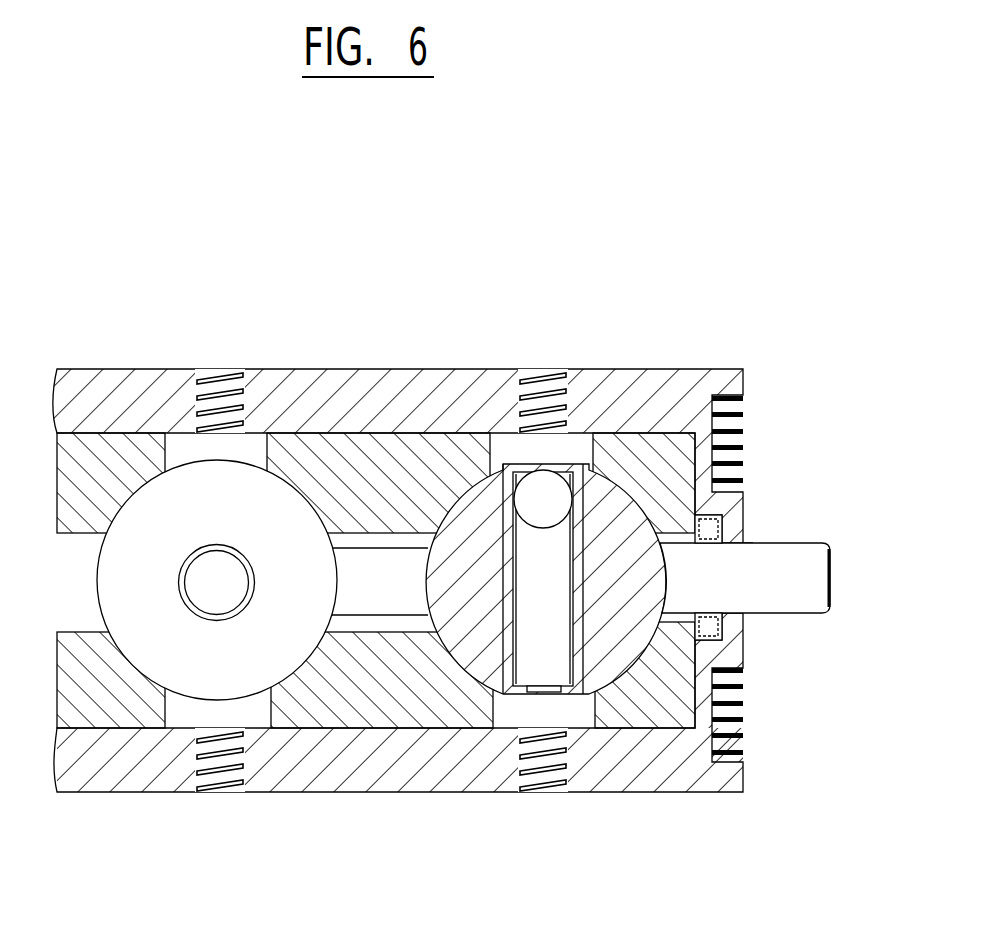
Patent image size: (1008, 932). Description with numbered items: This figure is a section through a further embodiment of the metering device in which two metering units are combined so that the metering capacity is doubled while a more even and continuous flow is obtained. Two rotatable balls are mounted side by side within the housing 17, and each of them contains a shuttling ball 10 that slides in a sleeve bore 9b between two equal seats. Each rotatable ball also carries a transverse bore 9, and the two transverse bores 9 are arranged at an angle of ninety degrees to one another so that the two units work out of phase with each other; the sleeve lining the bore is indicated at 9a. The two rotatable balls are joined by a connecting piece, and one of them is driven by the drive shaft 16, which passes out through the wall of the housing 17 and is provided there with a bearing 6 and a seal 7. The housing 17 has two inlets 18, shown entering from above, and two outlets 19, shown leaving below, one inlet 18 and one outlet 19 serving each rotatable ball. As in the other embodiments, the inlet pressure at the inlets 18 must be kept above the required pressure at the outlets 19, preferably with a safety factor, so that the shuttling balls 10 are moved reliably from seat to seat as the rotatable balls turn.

The bearing 6 is at (752, 542).
The seal 7 is at (723, 623).
The transverse bore 9 is at (505, 612).
The sleeve 9a is at (580, 643).
The sleeve bore 9b is at (233, 601).
The shuttling ball 10 is at (536, 503).
The drive shaft 16 is at (812, 573).
The housing 17 is at (320, 358).
The inlet 18 is at (213, 373).
The outlet 19 is at (228, 795).